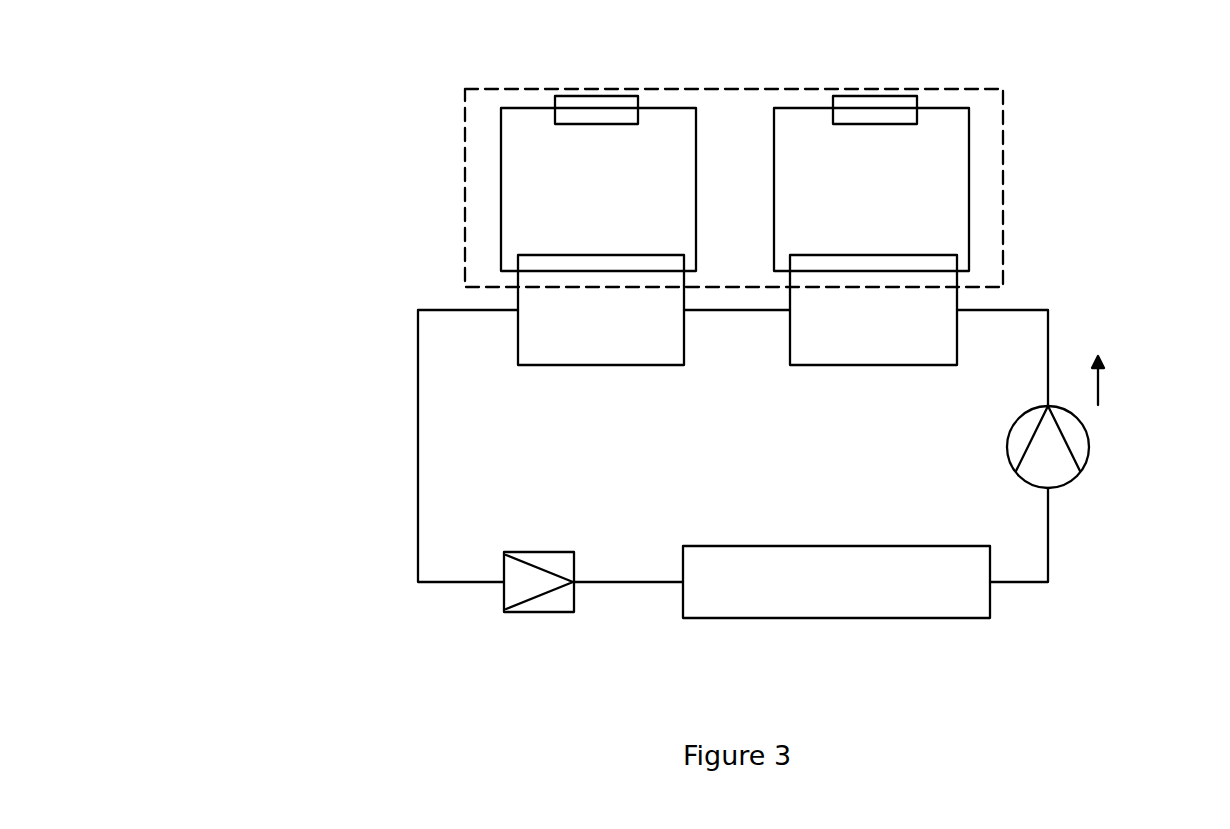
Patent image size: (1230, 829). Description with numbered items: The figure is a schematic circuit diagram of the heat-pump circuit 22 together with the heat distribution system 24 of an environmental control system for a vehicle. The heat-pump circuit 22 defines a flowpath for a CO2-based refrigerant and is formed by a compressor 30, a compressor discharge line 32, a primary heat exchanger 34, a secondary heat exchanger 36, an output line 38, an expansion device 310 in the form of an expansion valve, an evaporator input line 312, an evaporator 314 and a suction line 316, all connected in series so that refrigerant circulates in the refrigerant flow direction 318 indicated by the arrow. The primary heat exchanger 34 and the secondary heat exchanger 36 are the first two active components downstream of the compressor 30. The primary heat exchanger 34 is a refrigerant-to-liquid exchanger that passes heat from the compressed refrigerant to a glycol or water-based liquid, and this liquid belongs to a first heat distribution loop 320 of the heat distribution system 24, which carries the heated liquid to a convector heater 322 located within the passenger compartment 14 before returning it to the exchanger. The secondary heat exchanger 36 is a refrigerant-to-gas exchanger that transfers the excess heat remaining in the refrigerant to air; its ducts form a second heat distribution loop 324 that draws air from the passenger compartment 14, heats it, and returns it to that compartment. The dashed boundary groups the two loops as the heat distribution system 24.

The heat-pump circuit 22 is at (300, 345).
The heat distribution system 24 is at (462, 93).
The passenger compartment 14 is at (587, 99).
The convector heater 322 is at (865, 100).
The second heat distribution loop 324 is at (501, 173).
The first heat distribution loop 320 is at (969, 130).
The secondary heat exchanger 36 is at (518, 365).
The primary heat exchanger 34 is at (855, 365).
The output line 38 is at (418, 440).
The compressor discharge line 32 is at (1048, 316).
The refrigerant flow direction 318 is at (1098, 392).
The compressor 30 is at (1082, 470).
The suction line 316 is at (1048, 565).
The evaporator 314 is at (938, 618).
The evaporator input line 312 is at (657, 583).
The expansion device 310 is at (520, 612).